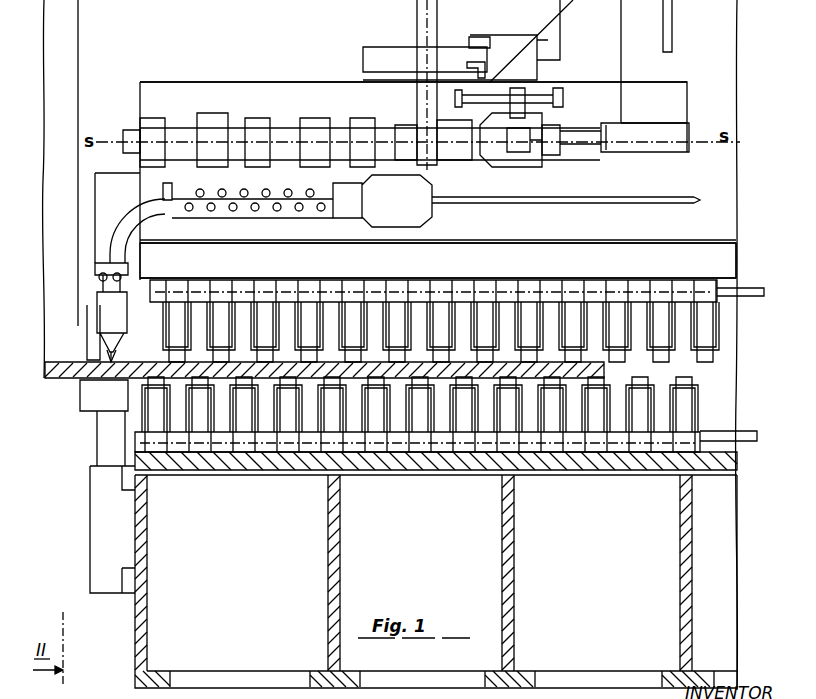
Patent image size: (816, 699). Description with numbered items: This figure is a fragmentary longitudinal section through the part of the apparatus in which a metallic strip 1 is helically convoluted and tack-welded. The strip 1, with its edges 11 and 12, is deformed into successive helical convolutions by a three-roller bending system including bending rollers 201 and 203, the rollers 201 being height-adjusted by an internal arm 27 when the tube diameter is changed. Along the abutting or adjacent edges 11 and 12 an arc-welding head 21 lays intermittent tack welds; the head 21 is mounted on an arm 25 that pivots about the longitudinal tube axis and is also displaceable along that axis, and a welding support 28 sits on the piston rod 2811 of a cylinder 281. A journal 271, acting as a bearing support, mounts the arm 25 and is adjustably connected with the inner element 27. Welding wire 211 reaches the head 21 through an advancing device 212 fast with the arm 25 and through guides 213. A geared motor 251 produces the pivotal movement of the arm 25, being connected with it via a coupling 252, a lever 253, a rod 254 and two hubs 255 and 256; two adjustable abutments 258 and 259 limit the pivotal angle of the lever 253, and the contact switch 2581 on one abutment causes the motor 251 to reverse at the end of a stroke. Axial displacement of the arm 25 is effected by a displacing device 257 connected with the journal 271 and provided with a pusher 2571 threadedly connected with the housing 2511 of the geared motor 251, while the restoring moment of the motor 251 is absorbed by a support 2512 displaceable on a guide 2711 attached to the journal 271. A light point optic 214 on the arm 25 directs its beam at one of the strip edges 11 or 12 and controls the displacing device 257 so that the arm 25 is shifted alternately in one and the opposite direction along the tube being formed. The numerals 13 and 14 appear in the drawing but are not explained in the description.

The metallic strip 1 is at (318, 478).
The strip edge 11 is at (90, 382).
The strip edge 12 is at (124, 356).
The upper gripper finger 13 is at (522, 340).
The lower gripper finger 14 is at (552, 440).
The arc-welding head 21 is at (142, 320).
The arm 25 is at (96, 210).
The internal arm 27 is at (716, 27).
The welding support 28 is at (118, 405).
The bending roller 201 is at (288, 318).
The bending roller 203 is at (246, 420).
The welding wire 211 is at (672, 202).
The advancing device 212 is at (414, 210).
The guides 213 is at (205, 230).
The light point optic 214 is at (93, 332).
The geared motor 251 is at (508, 159).
The coupling 252 is at (486, 148).
The lever 253 is at (424, 100).
The rod 254 is at (133, 130).
The hub 255 is at (212, 125).
The hub 256 is at (314, 125).
The displacing device 257 is at (640, 145).
The abutment 258 is at (370, 47).
The abutment 259 is at (390, 68).
The journal 271 is at (258, 100).
The cylinder 281 is at (128, 528).
The housing of the geared motor 2511 is at (538, 128).
The support 2512 is at (540, 62).
The pusher 2571 is at (578, 143).
The contact switch 2581 is at (467, 40).
The guide 2711 is at (530, 100).
The piston rod 2811 is at (106, 440).